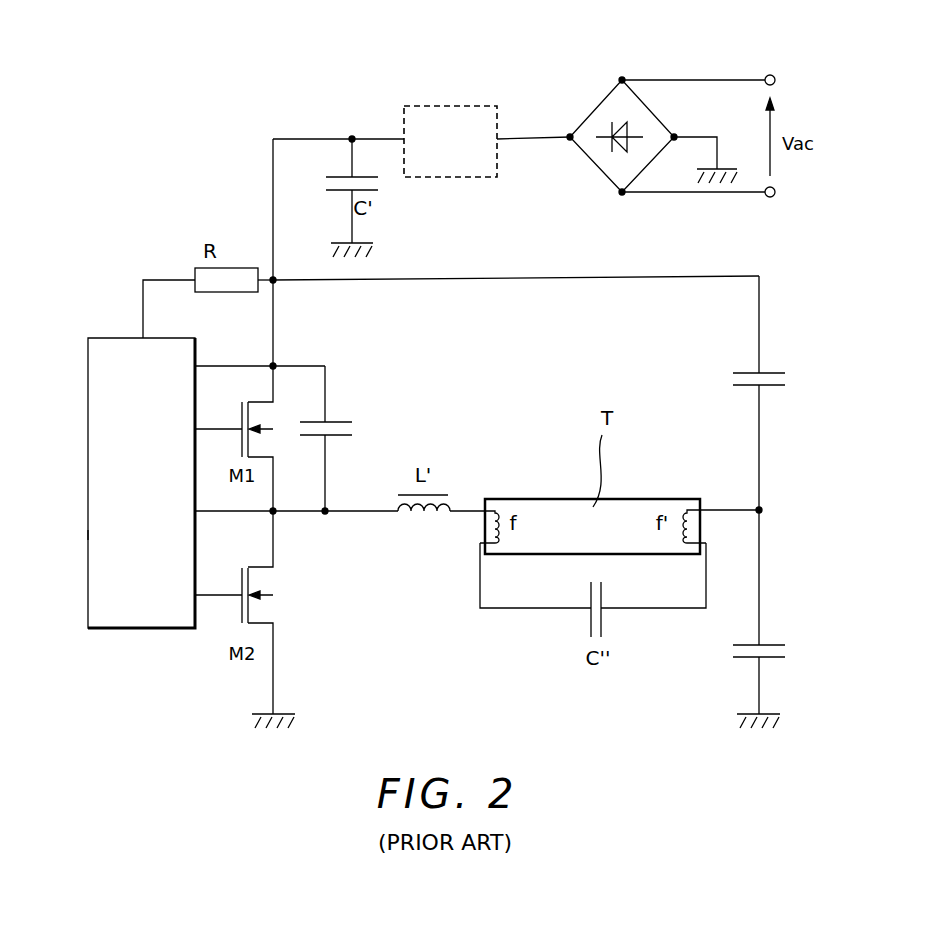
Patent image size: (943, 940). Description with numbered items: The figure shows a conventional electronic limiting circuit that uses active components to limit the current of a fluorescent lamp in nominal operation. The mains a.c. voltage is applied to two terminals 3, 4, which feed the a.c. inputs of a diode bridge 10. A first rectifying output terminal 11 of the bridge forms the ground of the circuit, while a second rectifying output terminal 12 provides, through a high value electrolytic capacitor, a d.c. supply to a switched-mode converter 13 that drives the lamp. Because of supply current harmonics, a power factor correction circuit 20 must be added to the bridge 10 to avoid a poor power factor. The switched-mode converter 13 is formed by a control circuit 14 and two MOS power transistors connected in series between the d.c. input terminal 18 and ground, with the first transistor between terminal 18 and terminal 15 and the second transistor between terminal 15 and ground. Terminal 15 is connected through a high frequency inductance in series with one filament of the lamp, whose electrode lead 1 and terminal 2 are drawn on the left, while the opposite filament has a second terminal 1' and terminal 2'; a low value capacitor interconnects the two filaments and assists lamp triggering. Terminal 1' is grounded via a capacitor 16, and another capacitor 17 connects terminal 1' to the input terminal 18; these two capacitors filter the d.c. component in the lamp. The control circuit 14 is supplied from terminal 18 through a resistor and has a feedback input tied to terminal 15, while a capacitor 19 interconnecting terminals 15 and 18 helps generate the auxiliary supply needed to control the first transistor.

The lamp electrode 1 is at (477, 490).
The second terminal of filament f' 1' is at (721, 480).
The electrode terminal 2 is at (498, 581).
The electrode terminal 2' is at (674, 589).
The terminal 3 is at (772, 75).
The terminal 4 is at (774, 196).
The diode bridge 10 is at (600, 102).
The first rectifying output terminal 11 is at (680, 136).
The second rectifying output terminal 12 is at (570, 137).
The switched-mode converter 13 is at (122, 310).
The control circuit 14 is at (88, 530).
The terminal of the switched-mode converter 15 is at (275, 515).
The capacitor 16 is at (772, 643).
The capacitor 17 is at (780, 372).
The input terminal 18 is at (271, 272).
The capacitor 19 is at (343, 422).
The power factor correction circuit 20 is at (430, 105).